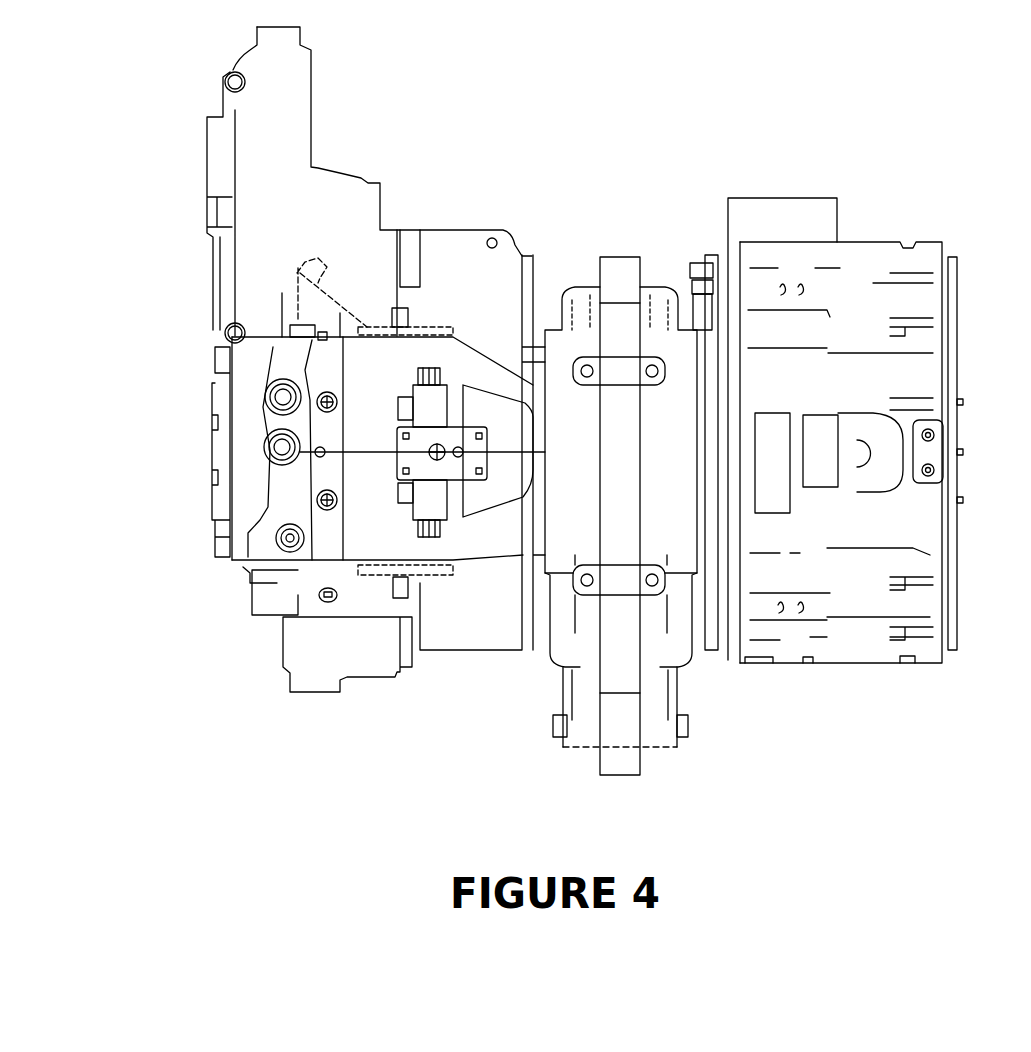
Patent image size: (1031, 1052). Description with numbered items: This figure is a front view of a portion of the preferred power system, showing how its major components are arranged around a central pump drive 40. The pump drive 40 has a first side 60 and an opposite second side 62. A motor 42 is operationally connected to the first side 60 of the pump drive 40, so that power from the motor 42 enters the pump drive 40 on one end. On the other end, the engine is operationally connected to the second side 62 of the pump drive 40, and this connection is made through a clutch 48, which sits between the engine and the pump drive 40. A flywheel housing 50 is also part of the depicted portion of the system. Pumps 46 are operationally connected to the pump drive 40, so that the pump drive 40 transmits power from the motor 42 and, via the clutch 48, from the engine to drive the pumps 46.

The pump drive 40 is at (622, 257).
The motor 42 is at (932, 238).
The pumps 46 is at (210, 447).
The clutch 48 is at (472, 230).
The flywheel housing 50 is at (263, 620).
The first side 60 is at (700, 363).
The second side 62 is at (548, 377).